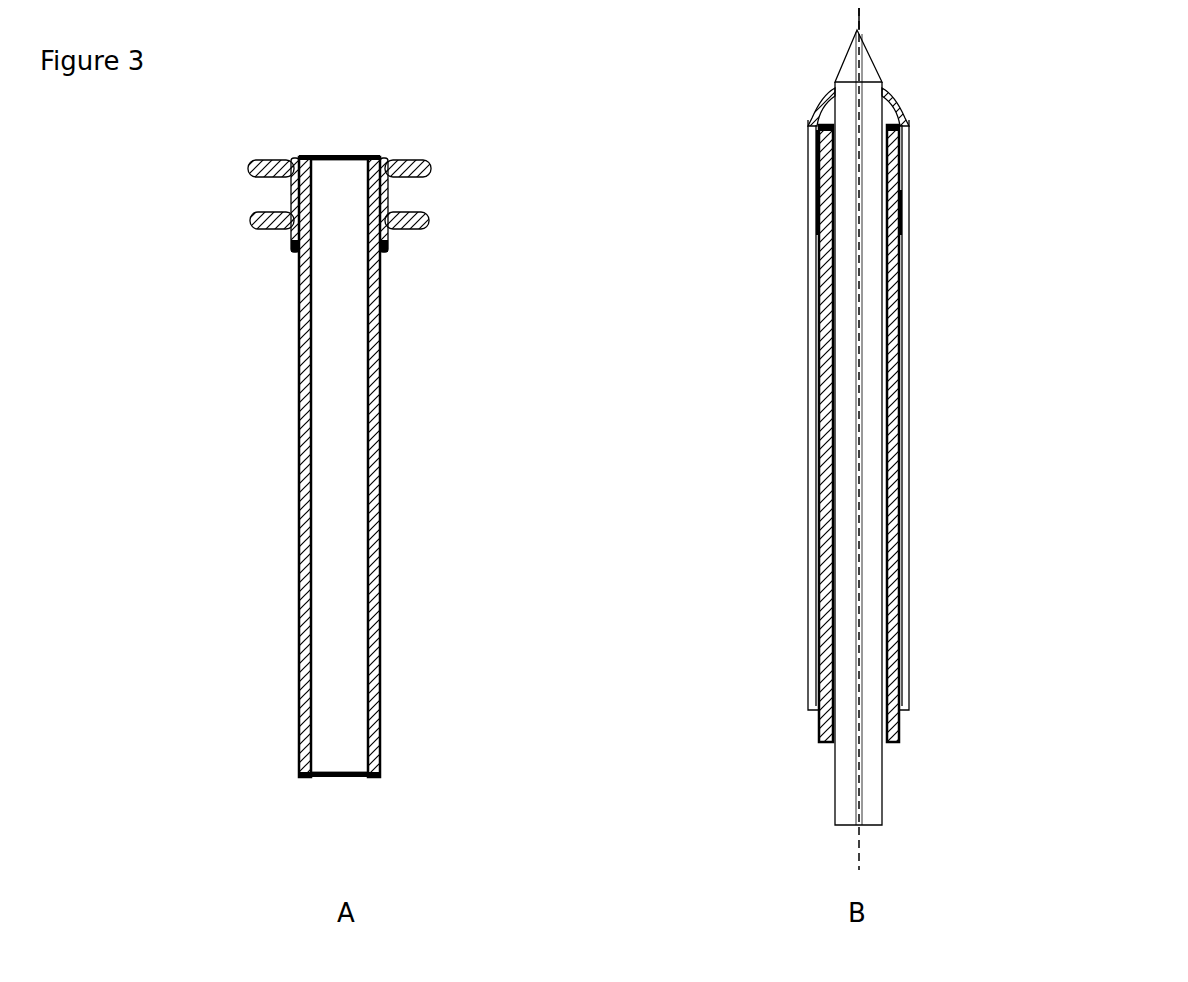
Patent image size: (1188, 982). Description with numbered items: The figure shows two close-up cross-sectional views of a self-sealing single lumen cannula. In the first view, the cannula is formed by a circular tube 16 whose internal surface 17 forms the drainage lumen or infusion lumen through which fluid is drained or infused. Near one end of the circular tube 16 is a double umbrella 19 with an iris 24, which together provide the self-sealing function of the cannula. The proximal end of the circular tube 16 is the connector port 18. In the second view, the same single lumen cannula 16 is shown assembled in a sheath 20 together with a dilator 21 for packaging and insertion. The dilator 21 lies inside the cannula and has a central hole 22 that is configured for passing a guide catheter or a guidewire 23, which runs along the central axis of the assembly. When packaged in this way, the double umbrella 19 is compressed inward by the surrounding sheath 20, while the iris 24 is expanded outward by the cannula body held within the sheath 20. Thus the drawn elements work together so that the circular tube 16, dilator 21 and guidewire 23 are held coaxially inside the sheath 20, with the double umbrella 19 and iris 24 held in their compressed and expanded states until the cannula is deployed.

In FIG. 3A, the circular tube 16 is at (382, 468).
In FIG. 3B, the circular tube 16 is at (820, 727).
In FIG. 3A, the internal surface 17 is at (345, 575).
In FIG. 3A, the connector port 18 is at (345, 778).
In FIG. 3A, the double umbrella 19 is at (285, 200).
In FIG. 3B, the double umbrella 19 is at (817, 108).
In FIG. 3B, the sheath 20 is at (908, 418).
In FIG. 3B, the dilator 21 is at (877, 543).
In FIG. 3B, the central hole 22 is at (862, 723).
In FIG. 3B, the guidewire 23 is at (862, 14).
In FIG. 3A, the iris 24 is at (295, 255).
In FIG. 3B, the iris 24 is at (910, 215).